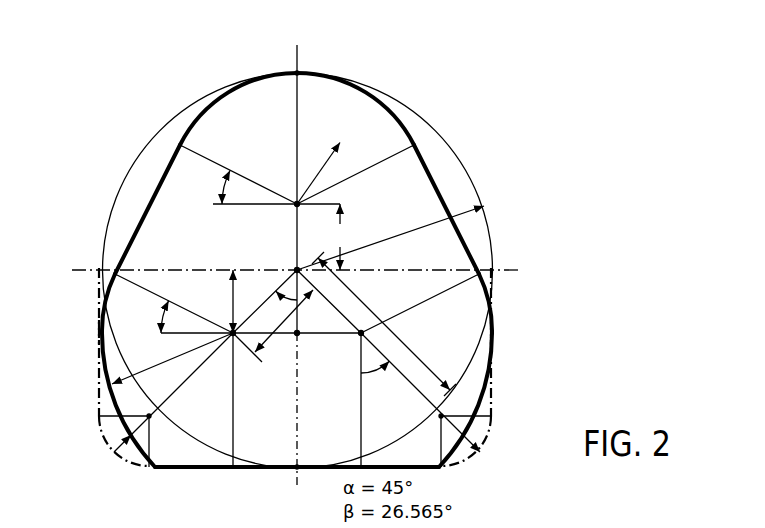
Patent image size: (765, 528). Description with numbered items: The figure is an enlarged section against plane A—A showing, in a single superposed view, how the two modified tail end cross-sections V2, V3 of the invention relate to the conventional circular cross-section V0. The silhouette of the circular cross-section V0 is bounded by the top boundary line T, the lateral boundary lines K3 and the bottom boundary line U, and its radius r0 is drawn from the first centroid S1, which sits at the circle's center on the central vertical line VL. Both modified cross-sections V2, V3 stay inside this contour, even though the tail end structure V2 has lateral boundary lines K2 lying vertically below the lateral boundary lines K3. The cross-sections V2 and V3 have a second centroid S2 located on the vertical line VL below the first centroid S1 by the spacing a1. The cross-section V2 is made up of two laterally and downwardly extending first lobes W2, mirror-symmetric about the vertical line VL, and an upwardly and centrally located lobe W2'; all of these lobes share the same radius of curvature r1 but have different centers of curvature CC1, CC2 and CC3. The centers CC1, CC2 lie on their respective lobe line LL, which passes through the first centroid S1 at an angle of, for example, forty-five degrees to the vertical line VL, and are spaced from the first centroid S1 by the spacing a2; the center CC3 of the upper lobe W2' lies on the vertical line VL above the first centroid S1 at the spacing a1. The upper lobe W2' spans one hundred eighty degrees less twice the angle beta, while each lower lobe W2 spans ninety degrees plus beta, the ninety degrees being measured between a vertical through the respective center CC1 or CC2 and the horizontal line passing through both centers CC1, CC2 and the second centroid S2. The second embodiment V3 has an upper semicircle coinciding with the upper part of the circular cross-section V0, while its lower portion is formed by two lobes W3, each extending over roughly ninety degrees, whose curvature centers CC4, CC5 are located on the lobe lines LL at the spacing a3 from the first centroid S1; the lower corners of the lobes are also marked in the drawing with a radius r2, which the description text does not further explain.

The circular conventional cross-sectional configuration V0 is at (386, 92).
The lobe W3 is at (113, 452).
The modified cross-sectional configuration V2 is at (403, 120).
The lateral boundary line K3 is at (100, 266).
The modified cross-sectional configuration V3 is at (494, 380).
The lateral boundary line K2 is at (101, 330).
The first lobe W2 is at (304, 394).
The upper central lobe W2' is at (226, 73).
The corner radius r2 is at (153, 469).
The first centroid S1 is at (296, 269).
The central vertical line VL is at (315, 266).
The top boundary line T is at (301, 68).
The bottom boundary line U is at (298, 473).
The center of curvature CC3 is at (297, 202).
The radius of curvature r1 is at (227, 264).
The spacing a1 is at (213, 282).
The radius r0 is at (390, 238).
The center of curvature CC1 is at (232, 331).
The center of curvature CC2 is at (360, 334).
The second centroid S2 is at (298, 333).
The spacing a2 is at (281, 321).
The spacing a3 is at (384, 324).
The lobe line LL is at (186, 384).
The curvature center CC4 is at (153, 417).
The curvature center CC5 is at (438, 417).